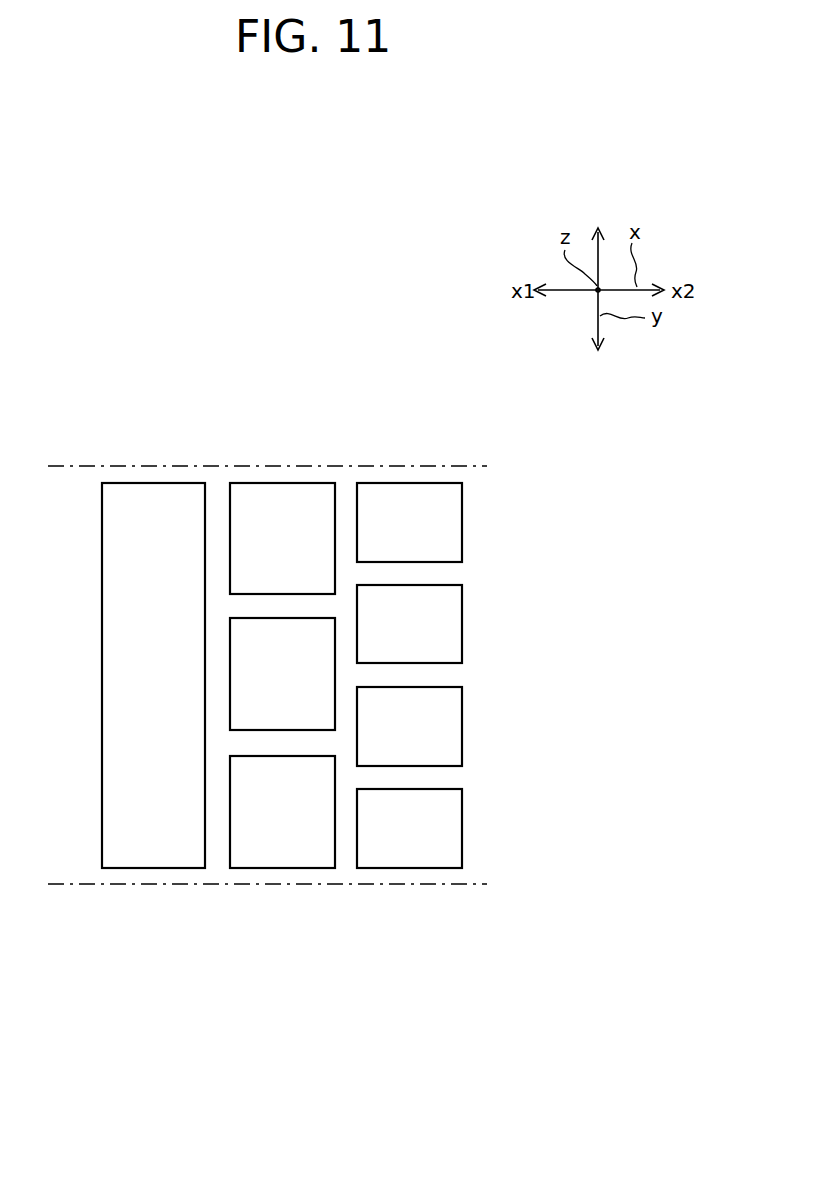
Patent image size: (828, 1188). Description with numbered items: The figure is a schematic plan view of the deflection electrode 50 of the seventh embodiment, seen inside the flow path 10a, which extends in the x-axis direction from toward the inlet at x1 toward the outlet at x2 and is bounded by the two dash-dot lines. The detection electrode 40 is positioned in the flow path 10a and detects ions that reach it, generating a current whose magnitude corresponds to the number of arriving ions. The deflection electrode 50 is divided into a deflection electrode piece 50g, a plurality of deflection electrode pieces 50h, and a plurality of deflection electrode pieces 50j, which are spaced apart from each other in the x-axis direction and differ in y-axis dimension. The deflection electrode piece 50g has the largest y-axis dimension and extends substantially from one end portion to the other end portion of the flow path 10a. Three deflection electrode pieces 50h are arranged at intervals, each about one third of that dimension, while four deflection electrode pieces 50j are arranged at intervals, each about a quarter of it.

The flow path 10a is at (465, 468).
The detection electrode 40 is at (347, 482).
The deflection electrode 50 is at (282, 755).
The deflection electrode piece 50g is at (152, 869).
The deflection electrode pieces 50h is at (287, 869).
The deflection electrode pieces 50j is at (409, 727).